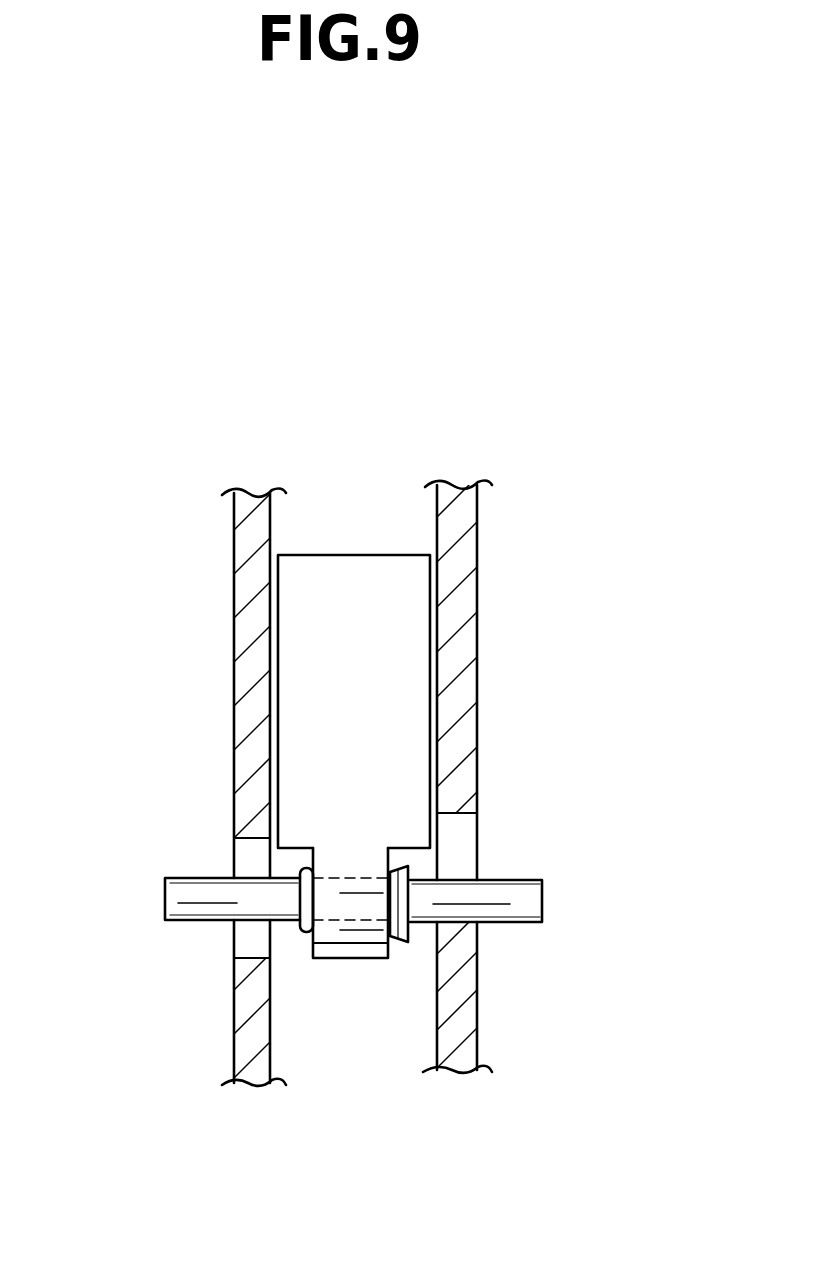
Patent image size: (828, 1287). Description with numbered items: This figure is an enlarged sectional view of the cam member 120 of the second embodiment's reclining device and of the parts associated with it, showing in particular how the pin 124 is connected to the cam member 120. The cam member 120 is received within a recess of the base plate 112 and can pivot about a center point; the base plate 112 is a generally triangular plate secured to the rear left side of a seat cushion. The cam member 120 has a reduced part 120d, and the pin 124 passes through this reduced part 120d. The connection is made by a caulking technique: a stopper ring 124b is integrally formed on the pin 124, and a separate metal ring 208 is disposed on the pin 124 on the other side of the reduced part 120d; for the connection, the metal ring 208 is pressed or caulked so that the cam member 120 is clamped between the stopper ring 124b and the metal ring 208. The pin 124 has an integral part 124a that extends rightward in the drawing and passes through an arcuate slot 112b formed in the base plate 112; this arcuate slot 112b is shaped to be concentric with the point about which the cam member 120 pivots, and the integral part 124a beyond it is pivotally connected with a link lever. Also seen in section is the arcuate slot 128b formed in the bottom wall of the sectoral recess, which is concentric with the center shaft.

The pin 124 is at (245, 577).
The base plate 112 is at (465, 550).
The cam member 120 is at (405, 657).
The arcuate slot 128b is at (240, 852).
The arcuate slot 112b is at (457, 826).
The integral part 124a is at (528, 897).
The stopper ring 124b is at (298, 897).
The metal ring 208 is at (413, 900).
The reduced part 120d is at (360, 950).